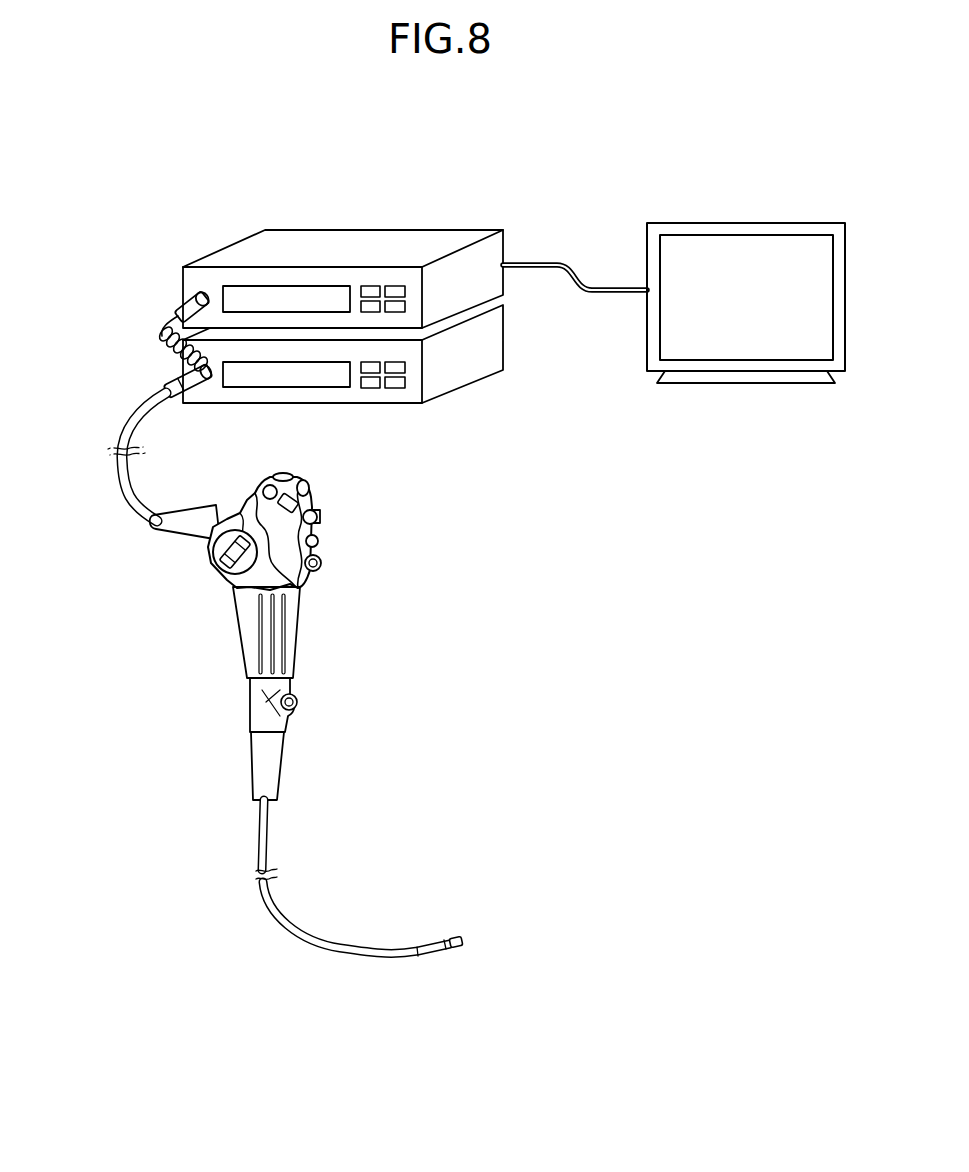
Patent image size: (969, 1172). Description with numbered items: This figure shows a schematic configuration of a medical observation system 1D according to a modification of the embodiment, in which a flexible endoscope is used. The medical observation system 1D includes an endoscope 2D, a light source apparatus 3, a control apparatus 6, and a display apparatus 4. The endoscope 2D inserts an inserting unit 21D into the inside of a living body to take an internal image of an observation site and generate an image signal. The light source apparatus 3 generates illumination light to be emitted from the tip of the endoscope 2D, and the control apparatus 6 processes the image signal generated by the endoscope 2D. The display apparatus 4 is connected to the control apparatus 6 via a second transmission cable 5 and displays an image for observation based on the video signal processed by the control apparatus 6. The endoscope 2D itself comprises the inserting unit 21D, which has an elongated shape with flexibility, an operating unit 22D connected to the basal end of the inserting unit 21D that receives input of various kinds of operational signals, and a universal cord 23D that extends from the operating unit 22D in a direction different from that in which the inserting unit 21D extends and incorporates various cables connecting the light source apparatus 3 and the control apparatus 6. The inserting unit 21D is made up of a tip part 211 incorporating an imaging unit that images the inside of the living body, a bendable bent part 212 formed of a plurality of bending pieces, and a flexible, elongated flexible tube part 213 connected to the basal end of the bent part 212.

The medical observation system 1D is at (787, 157).
The endoscope 2D is at (340, 491).
The light source apparatus 3 is at (494, 340).
The display apparatus 4 is at (748, 229).
The second transmission cable 5 is at (577, 278).
The control apparatus 6 is at (478, 233).
The inserting unit 21D is at (359, 907).
The operating unit 22D is at (270, 481).
The universal cord 23D is at (120, 483).
The tip part 211 is at (457, 950).
The bent part 212 is at (435, 943).
The flexible tube part 213 is at (310, 940).